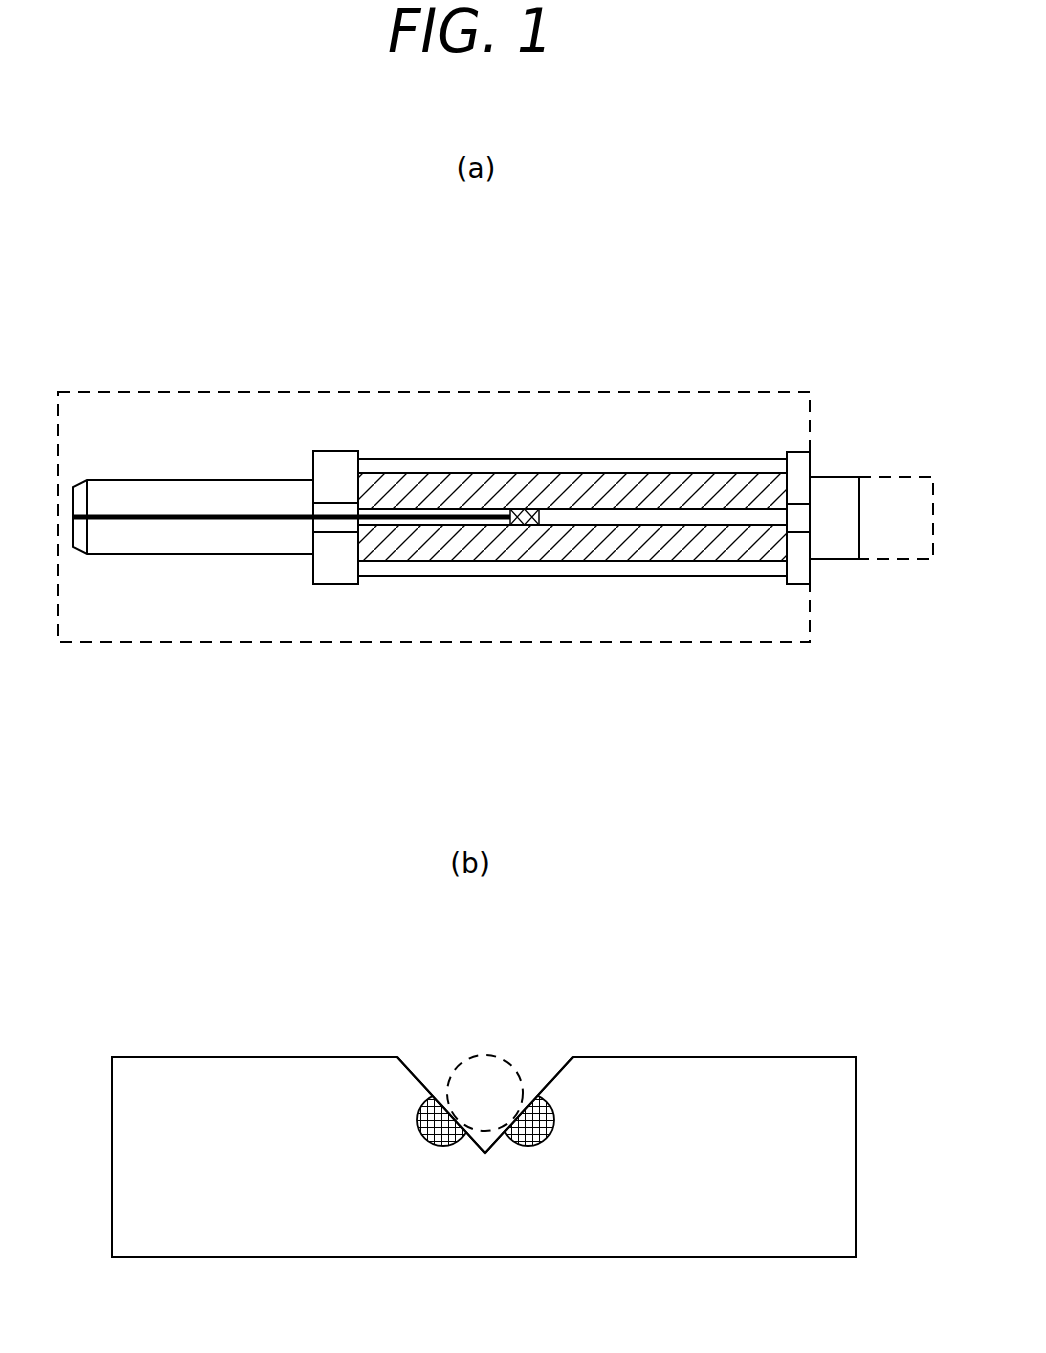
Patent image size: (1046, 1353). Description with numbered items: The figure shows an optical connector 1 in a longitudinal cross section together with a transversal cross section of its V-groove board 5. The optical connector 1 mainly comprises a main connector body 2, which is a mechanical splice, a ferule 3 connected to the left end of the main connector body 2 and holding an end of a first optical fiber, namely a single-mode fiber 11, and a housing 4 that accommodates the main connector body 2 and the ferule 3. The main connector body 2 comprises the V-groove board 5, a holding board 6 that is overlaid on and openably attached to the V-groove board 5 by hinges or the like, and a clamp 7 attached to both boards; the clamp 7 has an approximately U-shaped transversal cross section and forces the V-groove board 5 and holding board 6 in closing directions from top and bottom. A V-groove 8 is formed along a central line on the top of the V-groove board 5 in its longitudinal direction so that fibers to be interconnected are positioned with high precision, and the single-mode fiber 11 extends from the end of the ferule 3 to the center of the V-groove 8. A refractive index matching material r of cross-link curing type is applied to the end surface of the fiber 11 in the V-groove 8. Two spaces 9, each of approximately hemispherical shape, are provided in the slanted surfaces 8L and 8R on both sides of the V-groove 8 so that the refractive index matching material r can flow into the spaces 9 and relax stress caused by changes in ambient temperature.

The optical connector 1 is at (766, 306).
The main connector body 2 is at (572, 424).
The ferule 3 is at (201, 478).
The housing 4 is at (812, 418).
The V-groove board 5 is at (672, 545).
The holding board 6 is at (398, 476).
The clamp 7 is at (492, 470).
The V-groove 8 is at (486, 1034).
The slanted surface 8L is at (410, 1065).
The slanted surface 8R is at (562, 1066).
The space 9 is at (427, 1140).
The single-mode fiber 11 is at (242, 522).
The refractive index matching material r is at (527, 522).